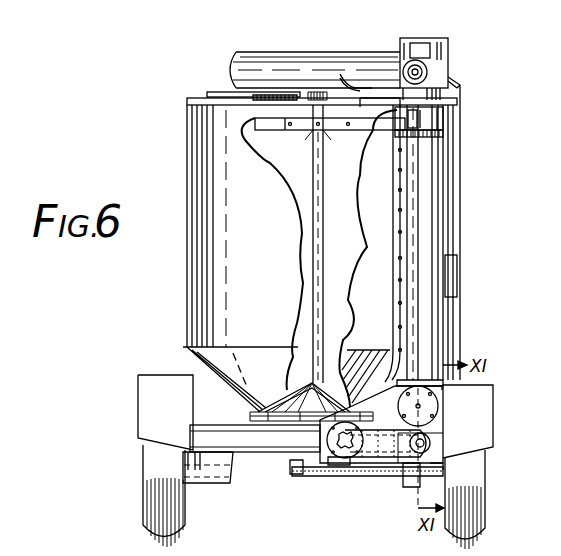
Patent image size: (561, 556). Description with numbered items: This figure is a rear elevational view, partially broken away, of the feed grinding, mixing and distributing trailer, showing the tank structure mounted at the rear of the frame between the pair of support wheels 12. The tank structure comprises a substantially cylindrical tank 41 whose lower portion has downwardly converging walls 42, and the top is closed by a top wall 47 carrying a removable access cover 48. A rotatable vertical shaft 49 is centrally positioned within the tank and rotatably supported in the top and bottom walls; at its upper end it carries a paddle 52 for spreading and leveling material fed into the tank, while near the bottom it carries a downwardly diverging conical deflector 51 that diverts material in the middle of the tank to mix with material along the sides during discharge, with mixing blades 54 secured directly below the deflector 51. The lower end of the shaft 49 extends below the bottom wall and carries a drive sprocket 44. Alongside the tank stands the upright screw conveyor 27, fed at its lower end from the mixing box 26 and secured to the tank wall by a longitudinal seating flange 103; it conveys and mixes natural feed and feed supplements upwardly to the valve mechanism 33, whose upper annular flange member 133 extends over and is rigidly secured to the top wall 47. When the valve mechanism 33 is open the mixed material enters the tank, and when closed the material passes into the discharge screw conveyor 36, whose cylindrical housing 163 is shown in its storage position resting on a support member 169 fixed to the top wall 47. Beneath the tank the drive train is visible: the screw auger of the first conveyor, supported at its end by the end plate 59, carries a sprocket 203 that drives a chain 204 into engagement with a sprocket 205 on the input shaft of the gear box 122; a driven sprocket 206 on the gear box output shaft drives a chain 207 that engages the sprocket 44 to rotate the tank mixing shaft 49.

The support wheels 12 is at (476, 478).
The mixing box 26 is at (372, 385).
The upright screw conveyor 27 is at (424, 256).
The valve mechanism 33 is at (432, 118).
The discharge screw conveyor 36 is at (290, 48).
The cylindrical tank 41 is at (197, 273).
The downwardly converging walls 42 is at (237, 356).
The drive sprocket 44 is at (305, 462).
The top wall 47 is at (186, 102).
The removable access cover 48 is at (222, 92).
The rotatable vertical shaft 49 is at (317, 262).
The conical deflector 51 is at (299, 373).
The paddle 52 is at (278, 126).
The mixing blades 54 is at (286, 385).
The end plate 59 is at (336, 466).
The longitudinal seating flange 103 is at (397, 246).
The gear box 122 is at (430, 433).
The upper annular flange member 133 is at (392, 42).
The cylindrical housing 163 is at (298, 65).
The support member 169 is at (373, 87).
The sprocket 203 is at (323, 441).
The chain 204 is at (389, 412).
The sprocket 205 is at (428, 442).
The driven sprocket 206 is at (410, 480).
The chain 207 is at (387, 477).